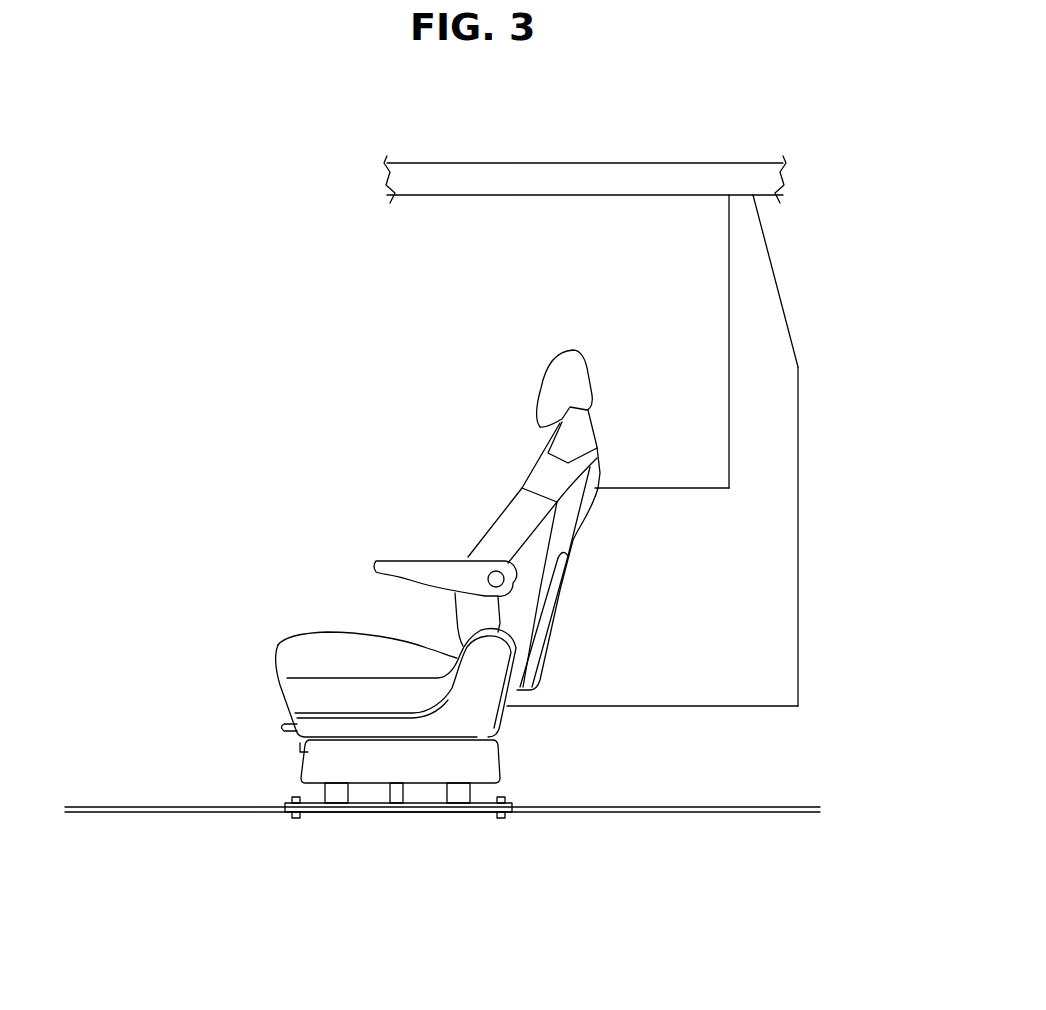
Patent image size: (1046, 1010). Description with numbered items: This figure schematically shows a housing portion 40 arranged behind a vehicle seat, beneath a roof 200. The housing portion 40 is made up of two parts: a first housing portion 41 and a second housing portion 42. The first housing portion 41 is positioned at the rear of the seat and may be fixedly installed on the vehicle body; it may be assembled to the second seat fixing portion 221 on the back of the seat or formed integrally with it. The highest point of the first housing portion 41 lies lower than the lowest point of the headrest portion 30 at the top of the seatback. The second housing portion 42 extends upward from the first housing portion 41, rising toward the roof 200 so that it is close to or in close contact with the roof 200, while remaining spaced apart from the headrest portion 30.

The roof 200 is at (498, 178).
The headrest portion 30 is at (568, 382).
The housing portion 40 is at (721, 450).
The first housing portion 41 is at (873, 438).
The second housing portion 42 is at (798, 367).
The second seat fixing portion 221 is at (550, 597).